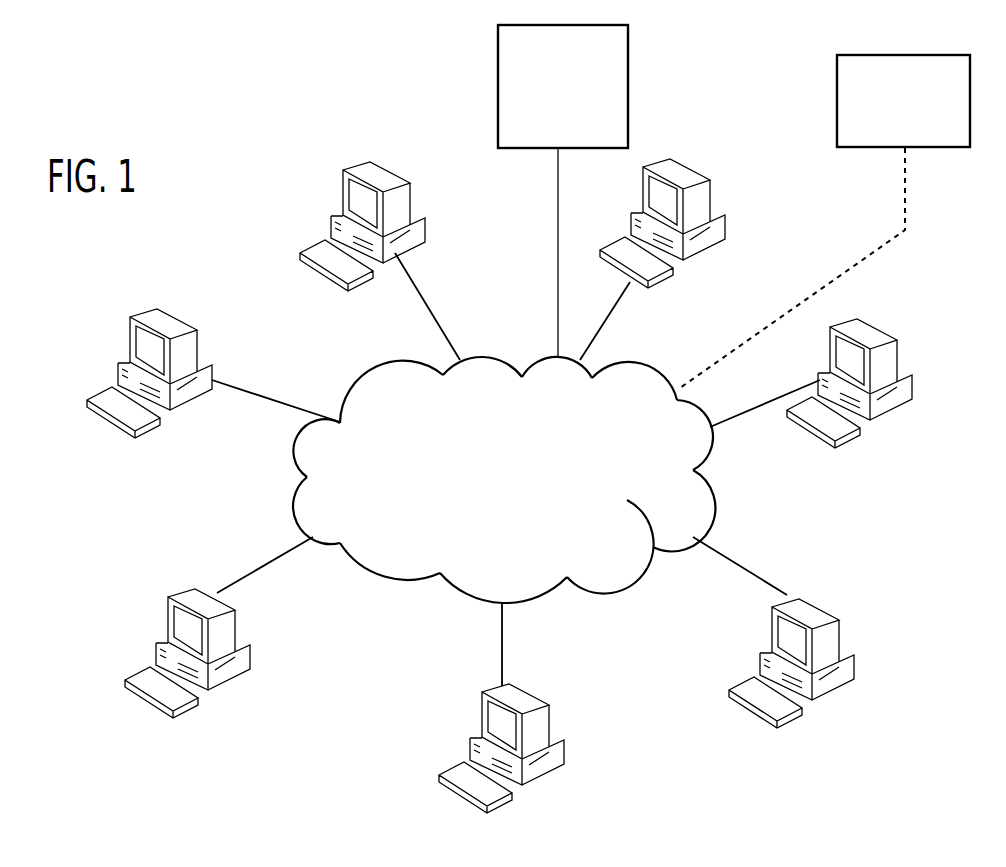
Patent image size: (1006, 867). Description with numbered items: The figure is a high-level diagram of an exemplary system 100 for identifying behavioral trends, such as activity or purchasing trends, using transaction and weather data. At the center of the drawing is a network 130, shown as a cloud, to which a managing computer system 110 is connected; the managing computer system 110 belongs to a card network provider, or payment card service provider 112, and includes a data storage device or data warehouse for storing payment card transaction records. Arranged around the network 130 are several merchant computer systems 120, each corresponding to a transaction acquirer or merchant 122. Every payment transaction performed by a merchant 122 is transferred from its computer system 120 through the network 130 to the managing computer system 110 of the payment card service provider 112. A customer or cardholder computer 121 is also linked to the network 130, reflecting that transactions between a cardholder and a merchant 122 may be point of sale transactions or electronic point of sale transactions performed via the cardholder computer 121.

The system 100 is at (283, 95).
The managing computer system 110 is at (630, 68).
The payment card service provider 112 is at (616, 46).
The merchant computer system 120 is at (509, 493).
The cardholder computer 121 is at (835, 95).
The merchant 122 is at (585, 455).
The network 130 is at (627, 585).